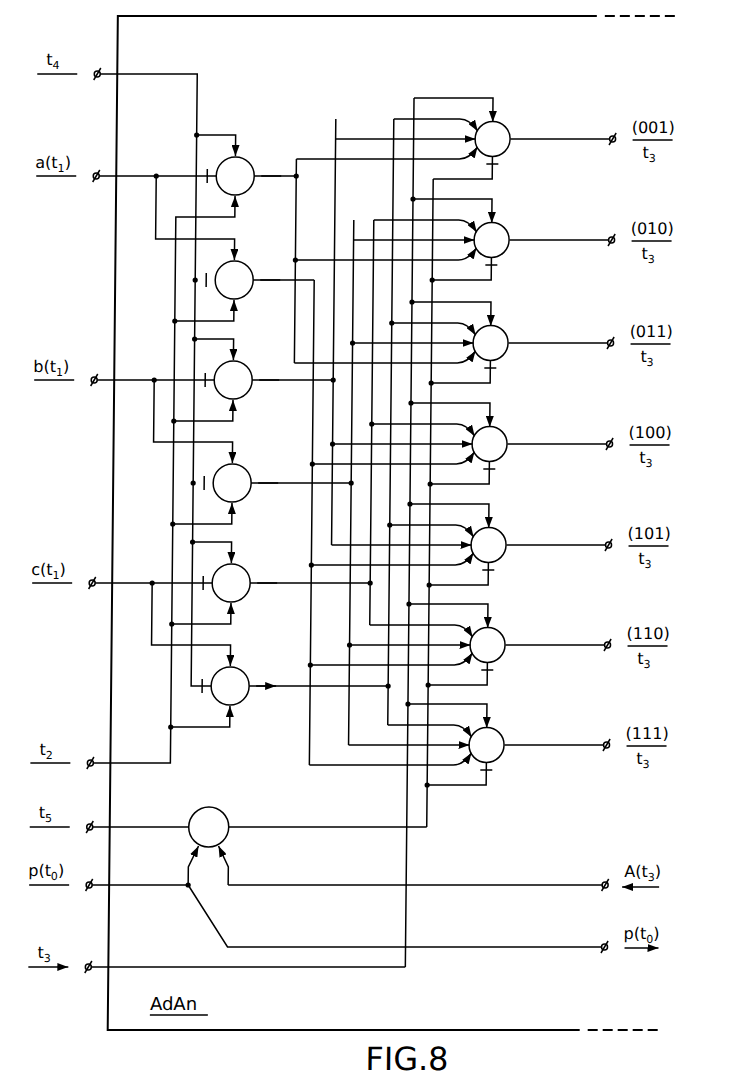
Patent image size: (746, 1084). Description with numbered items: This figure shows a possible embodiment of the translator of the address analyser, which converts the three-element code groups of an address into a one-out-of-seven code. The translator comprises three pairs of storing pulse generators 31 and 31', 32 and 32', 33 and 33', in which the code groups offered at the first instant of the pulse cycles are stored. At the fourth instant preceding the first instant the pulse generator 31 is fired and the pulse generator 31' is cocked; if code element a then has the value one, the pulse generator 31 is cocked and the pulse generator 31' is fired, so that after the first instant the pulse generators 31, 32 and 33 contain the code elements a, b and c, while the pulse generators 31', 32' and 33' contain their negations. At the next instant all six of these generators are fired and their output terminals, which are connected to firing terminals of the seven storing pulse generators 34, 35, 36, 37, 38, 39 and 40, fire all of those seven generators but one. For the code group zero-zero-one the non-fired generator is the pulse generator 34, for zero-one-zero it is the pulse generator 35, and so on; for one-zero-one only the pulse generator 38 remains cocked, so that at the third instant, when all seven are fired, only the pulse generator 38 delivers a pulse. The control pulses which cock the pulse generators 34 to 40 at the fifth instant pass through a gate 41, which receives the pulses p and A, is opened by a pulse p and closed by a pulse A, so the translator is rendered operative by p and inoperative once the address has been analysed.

The storing pulse generator 31 is at (235, 176).
The storing pulse generator 31' is at (234, 280).
The storing pulse generator 32 is at (233, 380).
The storing pulse generator 32' is at (232, 483).
The storing pulse generator 33 is at (231, 583).
The storing pulse generator 33' is at (230, 686).
The storing pulse generator 34 is at (492, 139).
The storing pulse generator 35 is at (491, 240).
The storing pulse generator 36 is at (490, 343).
The storing pulse generator 37 is at (489, 444).
The storing pulse generator 38 is at (488, 545).
The storing pulse generator 39 is at (487, 645).
The storing pulse generator 40 is at (486, 745).
The gate 41 is at (209, 827).